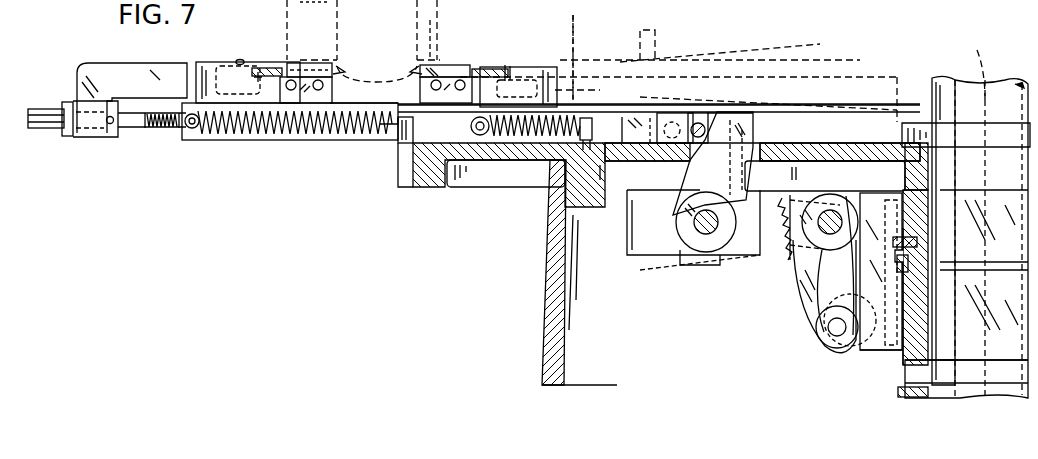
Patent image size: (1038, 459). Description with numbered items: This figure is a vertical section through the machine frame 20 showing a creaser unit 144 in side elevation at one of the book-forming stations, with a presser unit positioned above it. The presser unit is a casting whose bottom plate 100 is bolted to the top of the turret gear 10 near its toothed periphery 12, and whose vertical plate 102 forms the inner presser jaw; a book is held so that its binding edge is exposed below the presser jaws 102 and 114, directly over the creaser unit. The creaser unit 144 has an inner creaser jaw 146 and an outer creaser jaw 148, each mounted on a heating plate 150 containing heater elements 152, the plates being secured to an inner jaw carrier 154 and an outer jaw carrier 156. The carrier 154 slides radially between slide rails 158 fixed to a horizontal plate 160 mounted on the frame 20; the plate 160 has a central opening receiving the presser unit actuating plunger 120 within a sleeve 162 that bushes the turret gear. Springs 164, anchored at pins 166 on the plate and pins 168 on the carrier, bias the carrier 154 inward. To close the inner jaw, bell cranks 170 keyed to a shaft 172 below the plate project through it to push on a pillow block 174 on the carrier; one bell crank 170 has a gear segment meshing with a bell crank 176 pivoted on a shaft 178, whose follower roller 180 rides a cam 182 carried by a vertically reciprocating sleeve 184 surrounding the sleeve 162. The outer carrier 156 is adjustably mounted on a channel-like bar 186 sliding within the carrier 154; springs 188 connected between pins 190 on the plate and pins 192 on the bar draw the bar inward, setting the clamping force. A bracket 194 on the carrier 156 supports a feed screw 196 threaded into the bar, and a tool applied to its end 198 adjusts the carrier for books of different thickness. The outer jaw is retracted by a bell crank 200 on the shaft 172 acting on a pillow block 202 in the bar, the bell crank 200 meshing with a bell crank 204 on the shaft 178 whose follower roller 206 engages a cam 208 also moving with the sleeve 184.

The turret gear 10 is at (704, 60).
The periphery 12 is at (573, 30).
The machine frame 20 is at (548, 301).
The bottom plate 100 is at (658, 30).
The vertical plate 102 is at (430, 22).
The presser jaw 114 is at (313, 4).
The presser unit actuating plunger 120 is at (966, 64).
The creaser unit 144 is at (388, 212).
The inner creaser jaw 146 is at (420, 77).
The outer creaser jaw 148 is at (333, 76).
The heating plate 150 is at (306, 82).
The heater elements 152 is at (291, 90).
The inner jaw carrier 154 is at (530, 78).
The outer jaw carrier 156 is at (232, 78).
The slide rails 158 is at (602, 108).
The horizontal plate 160 is at (462, 190).
The sleeve 162 is at (940, 80).
The springs 164 is at (512, 140).
The pins 166 is at (596, 138).
The pins 168 is at (481, 138).
The bell cranks 170 is at (752, 128).
The shaft 172 is at (700, 240).
The pillow block 174 is at (716, 112).
The bell crank 176 is at (805, 293).
The shaft 178 is at (825, 210).
The follower roller 180 is at (818, 338).
The cam 182 is at (886, 352).
The sleeve 184 is at (920, 200).
The channel-like bar 186 is at (228, 142).
The springs 188 is at (262, 140).
The pins 190 is at (397, 142).
The pins 192 is at (192, 132).
The bracket 194 is at (118, 70).
The feed screw 196 is at (128, 133).
The end of the feed screw 198 is at (48, 132).
The bell crank 200 is at (685, 162).
The pillow block 202 is at (678, 112).
The bell crank 204 is at (858, 318).
The follower roller 206 is at (935, 346).
The cam 208 is at (905, 252).